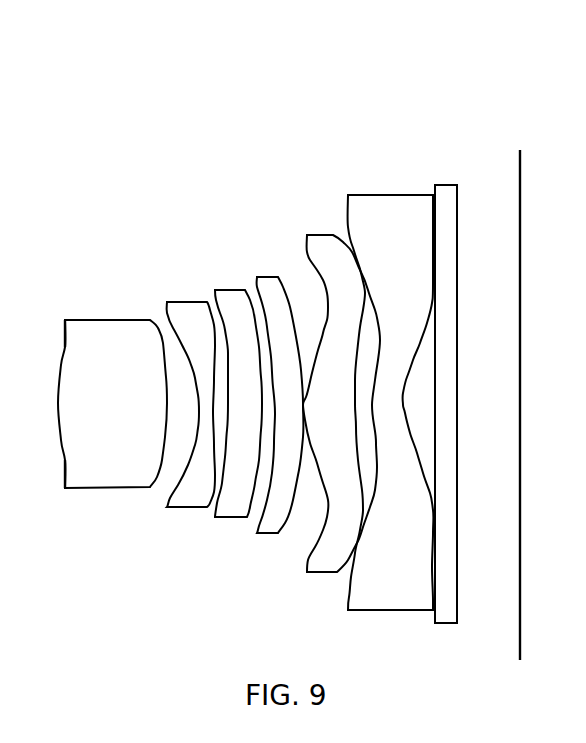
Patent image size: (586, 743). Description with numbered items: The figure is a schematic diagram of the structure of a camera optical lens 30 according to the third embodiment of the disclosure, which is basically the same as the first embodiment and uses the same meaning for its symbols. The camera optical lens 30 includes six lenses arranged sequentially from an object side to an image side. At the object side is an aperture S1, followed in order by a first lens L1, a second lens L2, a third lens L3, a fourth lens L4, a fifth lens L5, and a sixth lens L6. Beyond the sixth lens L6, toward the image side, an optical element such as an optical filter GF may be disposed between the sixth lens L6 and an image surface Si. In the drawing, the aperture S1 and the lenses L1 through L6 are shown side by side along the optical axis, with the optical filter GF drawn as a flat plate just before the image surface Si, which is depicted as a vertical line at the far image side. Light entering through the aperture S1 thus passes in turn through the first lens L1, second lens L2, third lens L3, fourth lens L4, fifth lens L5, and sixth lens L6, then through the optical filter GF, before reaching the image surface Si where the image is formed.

The camera optical lens 30 is at (284, 348).
The aperture S1 is at (53, 404).
The first lens L1 is at (112, 393).
The second lens L2 is at (191, 394).
The third lens L3 is at (238, 391).
The fourth lens L4 is at (280, 393).
The fifth lens L5 is at (341, 391).
The sixth lens L6 is at (391, 391).
The optical filter GF is at (447, 393).
The image surface Si is at (520, 391).